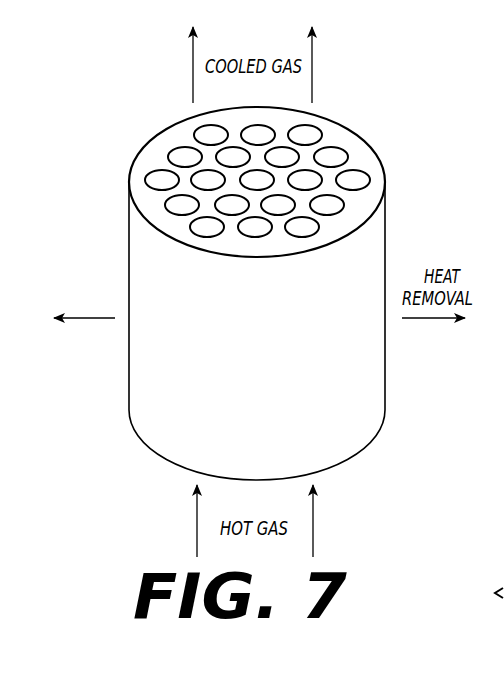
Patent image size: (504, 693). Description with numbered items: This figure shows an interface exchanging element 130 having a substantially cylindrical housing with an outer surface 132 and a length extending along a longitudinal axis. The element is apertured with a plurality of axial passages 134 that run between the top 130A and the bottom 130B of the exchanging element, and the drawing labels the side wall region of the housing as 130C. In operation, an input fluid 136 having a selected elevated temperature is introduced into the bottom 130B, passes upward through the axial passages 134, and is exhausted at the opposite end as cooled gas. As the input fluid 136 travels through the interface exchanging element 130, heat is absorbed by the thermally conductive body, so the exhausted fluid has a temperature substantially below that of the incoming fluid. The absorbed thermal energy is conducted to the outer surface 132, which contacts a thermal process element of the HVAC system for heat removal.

The interface exchanging element 130 is at (383, 65).
The top 130A is at (380, 163).
The bottom 130B is at (386, 390).
The outer side surface 130C is at (388, 214).
The outer surface 132 is at (147, 272).
The axial passages 134 is at (185, 156).
The input fluid 136 is at (314, 530).